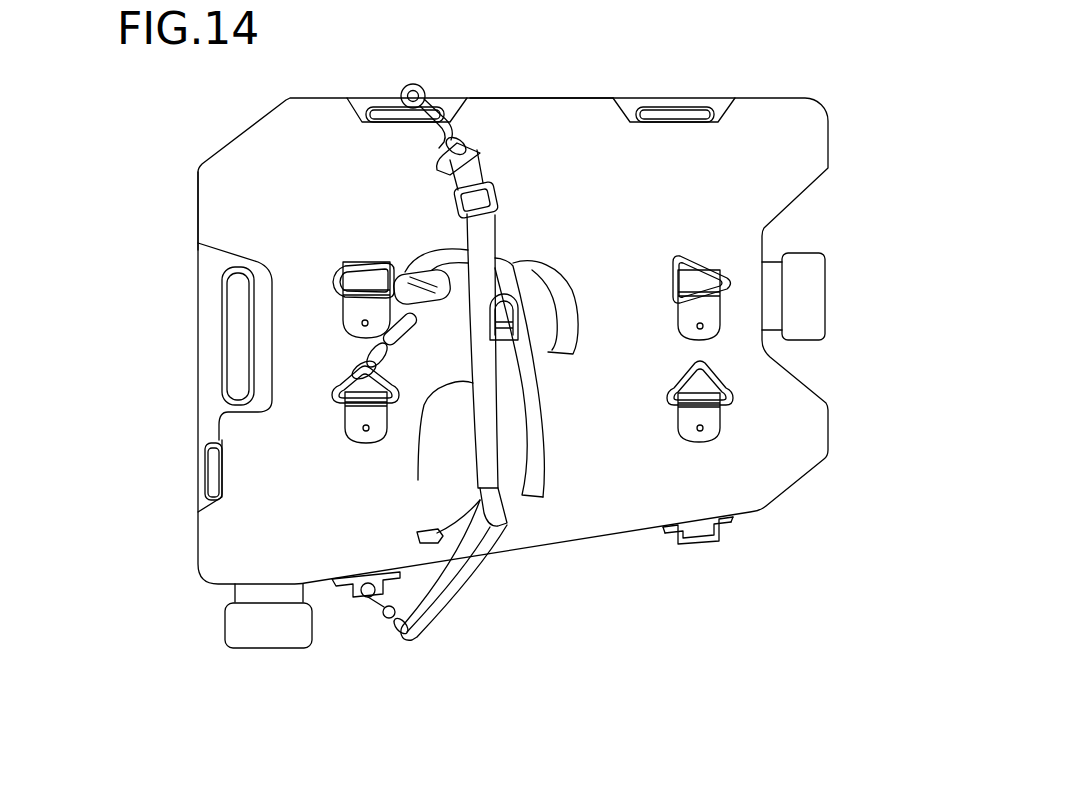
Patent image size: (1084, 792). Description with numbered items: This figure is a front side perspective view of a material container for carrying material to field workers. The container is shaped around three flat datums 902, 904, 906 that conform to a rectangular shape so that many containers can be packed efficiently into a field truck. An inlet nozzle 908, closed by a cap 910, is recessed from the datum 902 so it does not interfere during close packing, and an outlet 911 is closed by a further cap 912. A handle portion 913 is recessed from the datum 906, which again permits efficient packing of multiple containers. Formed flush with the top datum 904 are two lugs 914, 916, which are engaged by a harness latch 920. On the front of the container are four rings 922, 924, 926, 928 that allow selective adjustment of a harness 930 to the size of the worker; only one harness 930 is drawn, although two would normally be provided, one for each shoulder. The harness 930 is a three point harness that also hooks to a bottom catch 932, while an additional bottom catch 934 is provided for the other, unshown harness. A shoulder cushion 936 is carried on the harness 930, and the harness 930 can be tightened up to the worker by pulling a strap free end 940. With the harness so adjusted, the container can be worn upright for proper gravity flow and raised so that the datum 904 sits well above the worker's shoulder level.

The flat datum 902 is at (828, 134).
The top datum 904 is at (535, 98).
The flat datum 906 is at (198, 201).
The inlet nozzle 908 is at (770, 298).
The cap 910 is at (815, 275).
The outlet 911 is at (232, 590).
The cap 912 is at (256, 628).
The handle portion 913 is at (224, 348).
The lug 914 is at (377, 98).
The lug 916 is at (677, 98).
The harness latch 920 is at (414, 86).
The ring 922 is at (352, 262).
The ring 924 is at (330, 392).
The ring 926 is at (679, 262).
The ring 928 is at (667, 393).
The harness 930 is at (513, 238).
The bottom catch 932 is at (350, 598).
The bottom catch 934 is at (700, 543).
The shoulder cushion 936 is at (418, 480).
The strap free end 940 is at (565, 314).